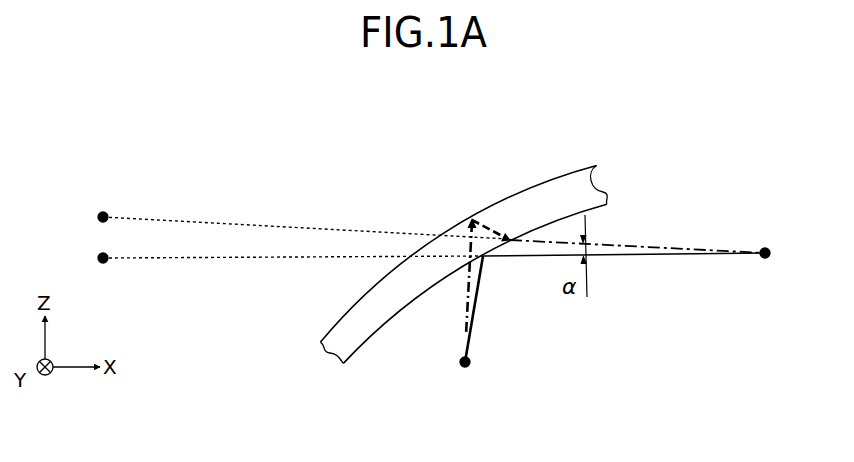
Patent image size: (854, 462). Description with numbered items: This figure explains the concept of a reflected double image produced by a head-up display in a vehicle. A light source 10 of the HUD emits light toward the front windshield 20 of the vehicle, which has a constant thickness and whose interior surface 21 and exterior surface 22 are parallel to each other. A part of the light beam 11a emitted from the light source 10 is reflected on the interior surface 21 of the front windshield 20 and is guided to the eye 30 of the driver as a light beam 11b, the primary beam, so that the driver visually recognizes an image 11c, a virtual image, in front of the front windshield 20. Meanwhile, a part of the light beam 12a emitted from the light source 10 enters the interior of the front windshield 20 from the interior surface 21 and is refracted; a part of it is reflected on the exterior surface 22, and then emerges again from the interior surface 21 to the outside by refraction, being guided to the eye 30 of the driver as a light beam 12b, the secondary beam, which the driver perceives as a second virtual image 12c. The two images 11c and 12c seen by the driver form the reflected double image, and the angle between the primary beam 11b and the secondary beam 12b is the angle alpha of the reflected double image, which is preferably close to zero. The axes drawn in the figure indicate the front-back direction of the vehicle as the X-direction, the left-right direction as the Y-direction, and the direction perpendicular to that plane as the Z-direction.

The light source 10 is at (462, 364).
The front windshield 20 is at (594, 174).
The interior surface 21 is at (609, 203).
The exterior surface 22 is at (531, 186).
The eye 30 is at (768, 251).
The light beam 11a is at (478, 293).
The light beam (primary beam) 11b is at (614, 256).
The image (virtual image) 11c is at (100, 256).
The light beam 12a is at (466, 287).
The light beam (secondary beam) 12b is at (628, 244).
The image (virtual image) 12c is at (100, 215).